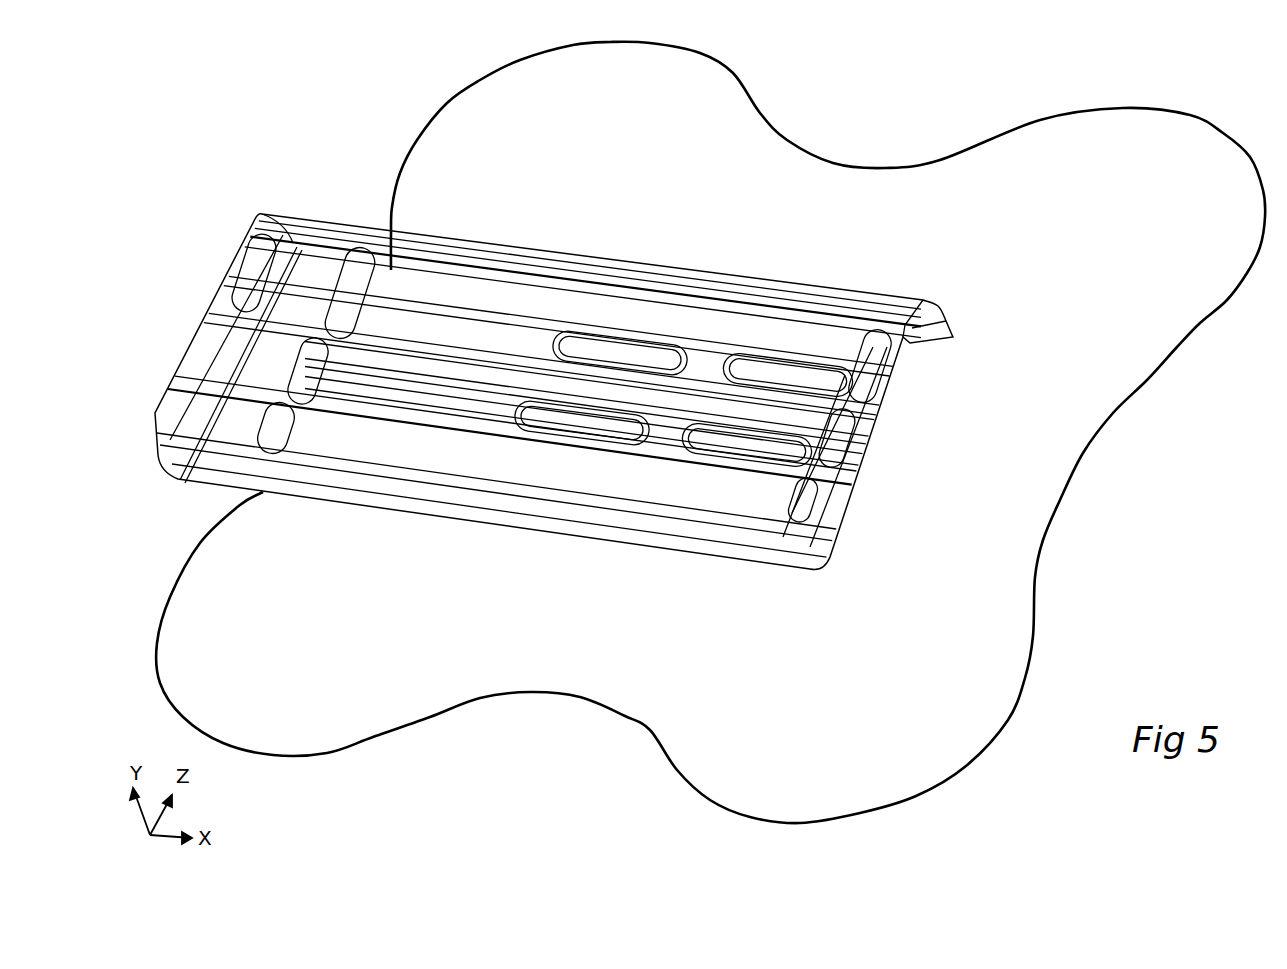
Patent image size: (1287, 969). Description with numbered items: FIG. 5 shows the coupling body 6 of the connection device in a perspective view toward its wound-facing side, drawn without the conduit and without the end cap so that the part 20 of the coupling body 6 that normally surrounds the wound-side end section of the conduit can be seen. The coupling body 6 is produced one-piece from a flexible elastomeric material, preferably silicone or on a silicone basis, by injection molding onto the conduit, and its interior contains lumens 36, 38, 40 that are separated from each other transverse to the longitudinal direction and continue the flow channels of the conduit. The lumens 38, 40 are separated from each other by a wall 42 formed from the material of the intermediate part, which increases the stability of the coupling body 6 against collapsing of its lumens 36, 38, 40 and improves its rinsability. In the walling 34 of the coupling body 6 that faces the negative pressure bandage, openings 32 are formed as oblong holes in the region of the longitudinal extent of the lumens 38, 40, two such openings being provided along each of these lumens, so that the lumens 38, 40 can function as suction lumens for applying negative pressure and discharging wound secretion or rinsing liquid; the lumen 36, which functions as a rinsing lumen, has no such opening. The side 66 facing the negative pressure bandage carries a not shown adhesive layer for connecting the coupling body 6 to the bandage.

The coupling body 6 is at (843, 141).
The part which at least partially surrounds the end section 20 is at (398, 166).
The openings 32 is at (577, 447).
The walling 34 is at (660, 443).
The lumen 36 is at (292, 440).
The lumen 38 is at (310, 377).
The lumen 40 is at (360, 287).
The wall 42 is at (326, 328).
The side 66 is at (842, 679).